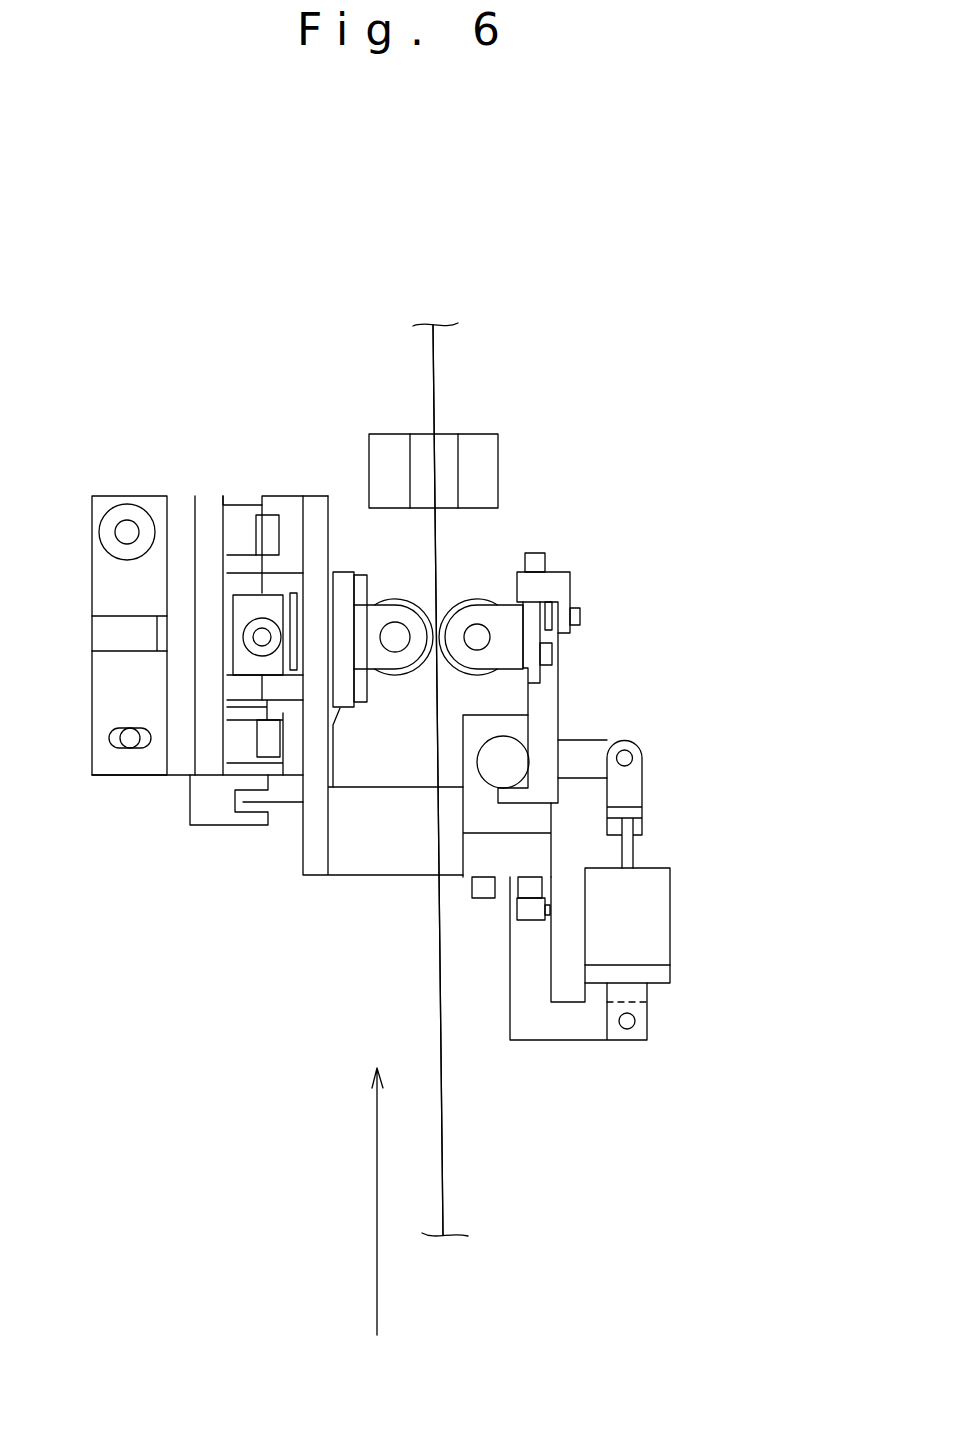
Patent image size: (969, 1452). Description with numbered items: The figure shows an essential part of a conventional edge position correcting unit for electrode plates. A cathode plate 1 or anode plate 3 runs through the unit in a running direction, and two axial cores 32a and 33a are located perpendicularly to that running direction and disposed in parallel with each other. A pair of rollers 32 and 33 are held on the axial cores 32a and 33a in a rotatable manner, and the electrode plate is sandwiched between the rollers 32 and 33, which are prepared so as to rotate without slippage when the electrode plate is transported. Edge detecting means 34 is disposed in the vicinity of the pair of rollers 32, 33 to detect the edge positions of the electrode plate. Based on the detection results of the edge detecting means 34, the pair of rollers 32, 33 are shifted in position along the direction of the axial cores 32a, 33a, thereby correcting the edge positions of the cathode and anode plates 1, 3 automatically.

The cathode plate 1 is at (443, 1147).
The anode plate 3 is at (538, 1193).
The roller 32 is at (480, 597).
The axial core 32a is at (477, 637).
The roller 33 is at (393, 597).
The axial core 33a is at (395, 637).
The edge detecting means 34 is at (478, 455).